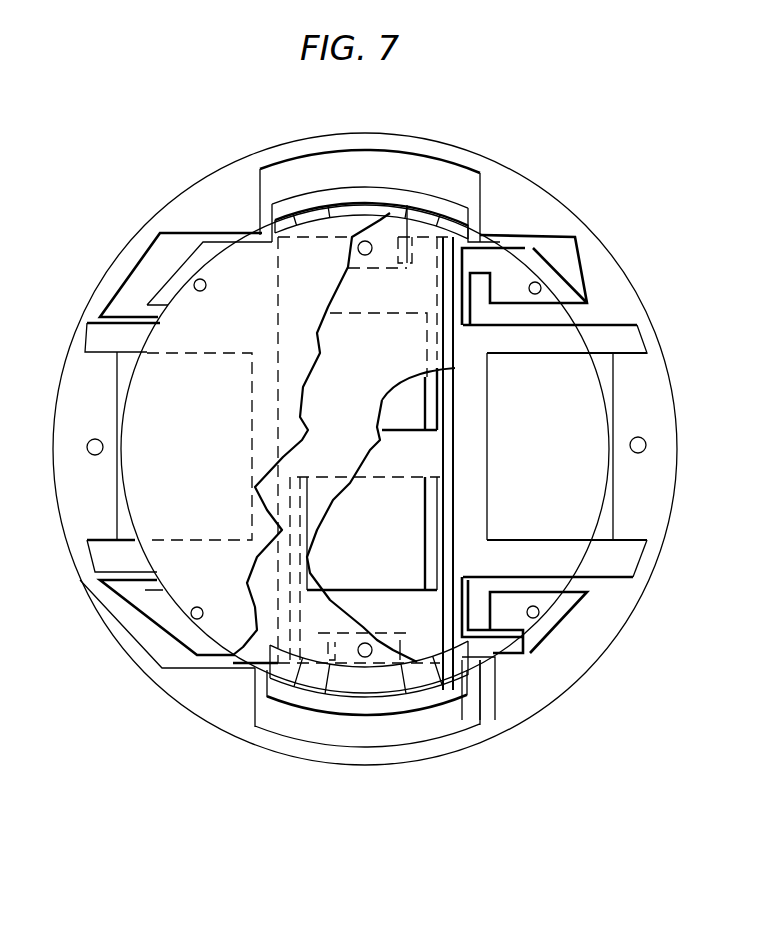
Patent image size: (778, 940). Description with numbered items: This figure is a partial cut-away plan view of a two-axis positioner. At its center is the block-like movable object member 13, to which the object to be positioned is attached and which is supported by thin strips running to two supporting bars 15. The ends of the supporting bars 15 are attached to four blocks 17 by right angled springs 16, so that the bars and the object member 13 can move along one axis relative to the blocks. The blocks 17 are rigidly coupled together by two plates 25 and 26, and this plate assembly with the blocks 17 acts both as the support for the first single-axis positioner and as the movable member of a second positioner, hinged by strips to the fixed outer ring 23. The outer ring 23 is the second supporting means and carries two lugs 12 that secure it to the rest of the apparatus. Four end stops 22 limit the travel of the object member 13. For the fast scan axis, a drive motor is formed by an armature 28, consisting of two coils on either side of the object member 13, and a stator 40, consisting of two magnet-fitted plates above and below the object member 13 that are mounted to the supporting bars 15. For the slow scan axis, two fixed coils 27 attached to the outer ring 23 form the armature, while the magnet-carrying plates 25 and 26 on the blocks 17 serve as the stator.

The lugs 12 is at (657, 517).
The movable object member 13 is at (419, 463).
The supporting bars 15 is at (445, 690).
The right angled springs 16 is at (493, 660).
The blocks 17 is at (168, 280).
The end stops 22 is at (217, 707).
The fixed outer ring 23 is at (262, 170).
The plate 25 is at (555, 451).
The plate 26 is at (168, 440).
The fixed coils 27 is at (567, 446).
The armature 28 is at (376, 479).
The stator 40 is at (342, 434).